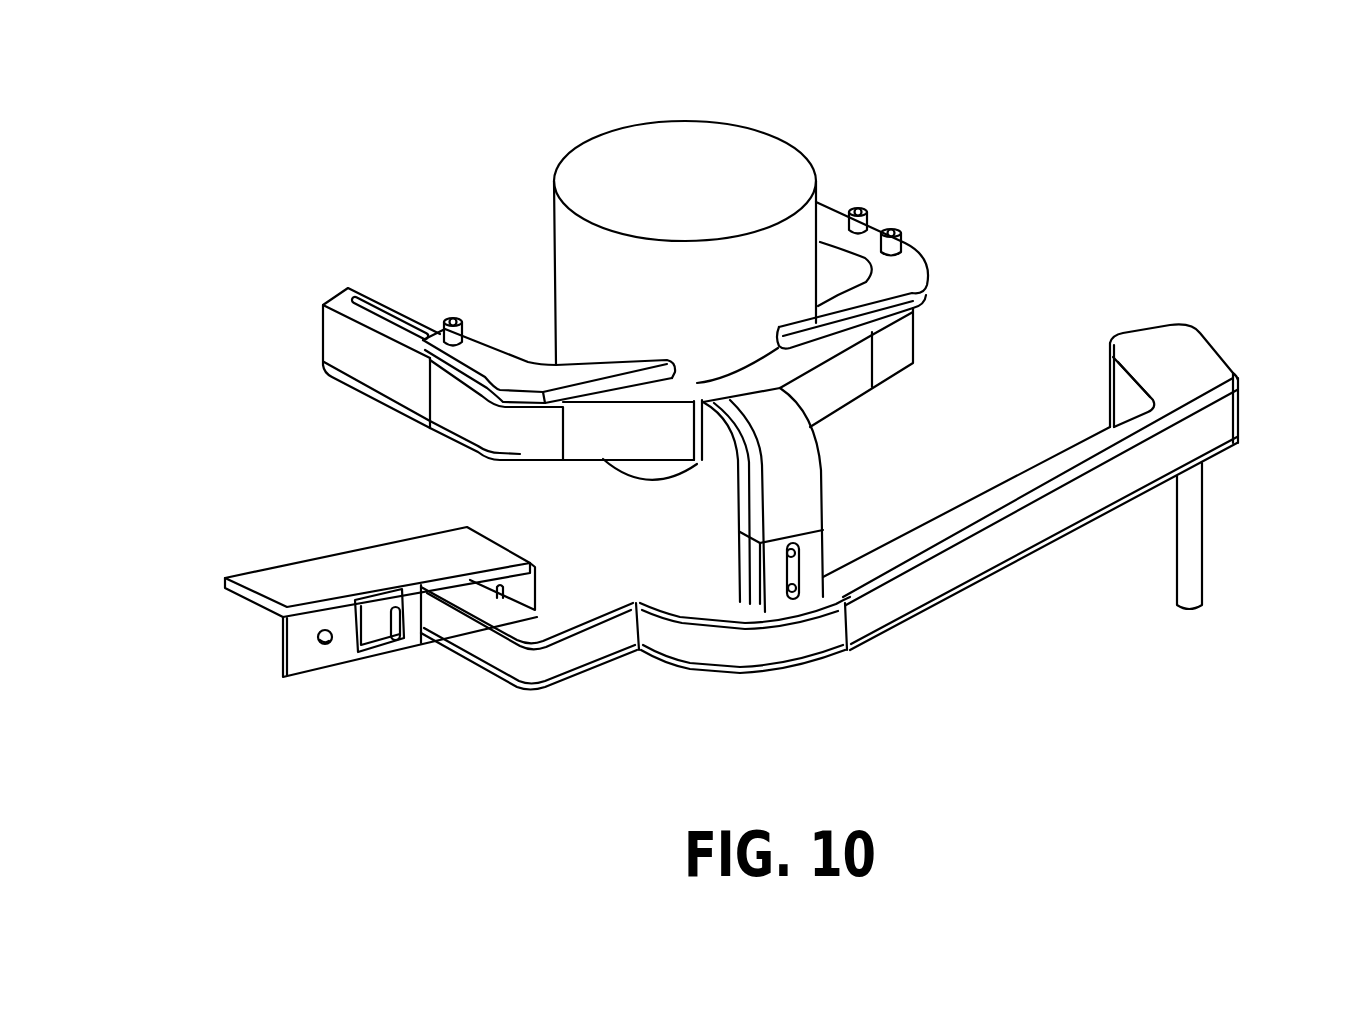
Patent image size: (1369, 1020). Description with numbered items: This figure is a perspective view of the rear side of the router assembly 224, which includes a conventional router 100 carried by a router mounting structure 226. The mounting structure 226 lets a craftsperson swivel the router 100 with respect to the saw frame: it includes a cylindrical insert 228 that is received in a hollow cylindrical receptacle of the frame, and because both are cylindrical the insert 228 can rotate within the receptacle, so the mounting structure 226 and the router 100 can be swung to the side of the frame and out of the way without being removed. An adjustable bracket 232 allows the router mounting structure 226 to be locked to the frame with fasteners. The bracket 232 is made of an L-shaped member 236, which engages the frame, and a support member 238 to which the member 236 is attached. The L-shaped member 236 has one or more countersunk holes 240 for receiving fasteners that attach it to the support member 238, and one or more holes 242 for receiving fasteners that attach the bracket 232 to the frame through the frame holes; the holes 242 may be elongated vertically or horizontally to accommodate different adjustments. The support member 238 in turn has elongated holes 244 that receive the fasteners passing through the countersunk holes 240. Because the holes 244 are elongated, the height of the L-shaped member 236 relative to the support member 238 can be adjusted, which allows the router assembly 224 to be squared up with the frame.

The router 100 is at (682, 120).
The router assembly 224 is at (858, 114).
The router mounting structure 226 is at (960, 268).
The cylindrical insert 228 is at (1202, 530).
The adjustable bracket 232 is at (389, 627).
The L-shaped member 236 is at (268, 570).
The support member 238 is at (537, 572).
The countersunk holes 240 is at (396, 640).
The holes 242 is at (323, 628).
The elongated holes 244 is at (396, 606).